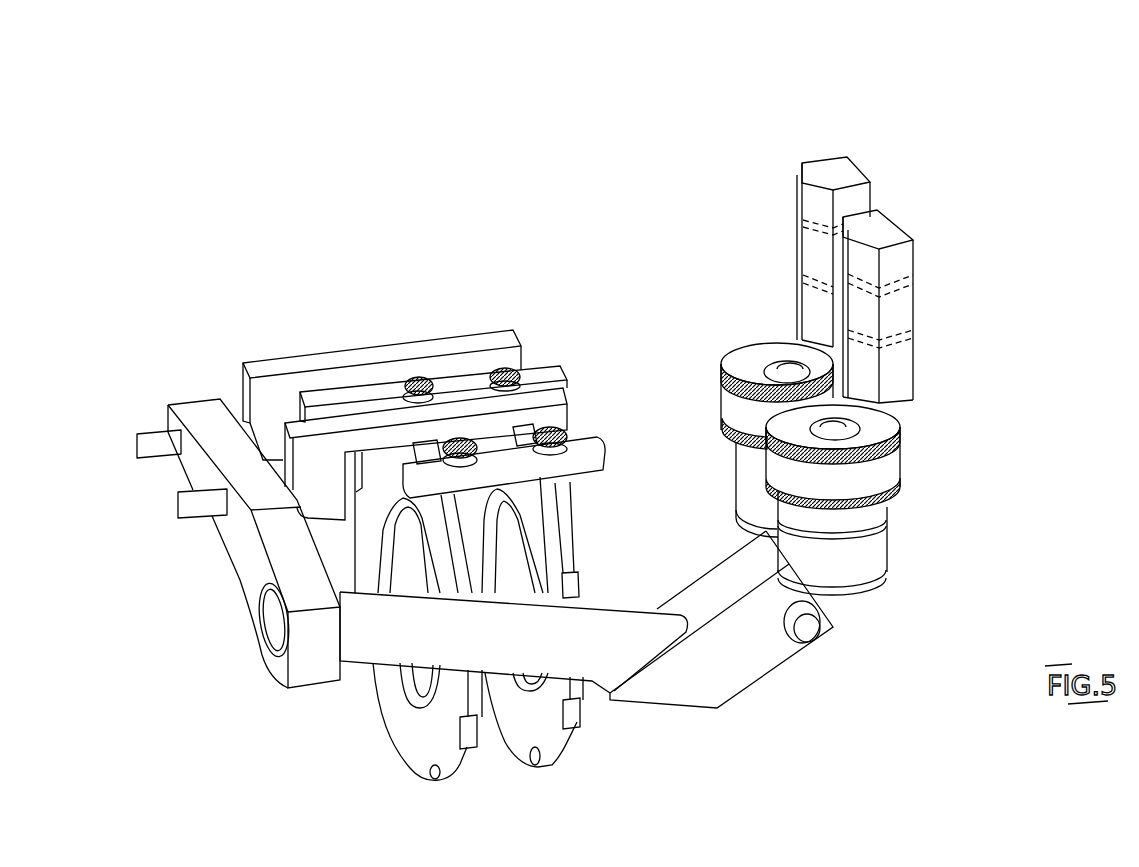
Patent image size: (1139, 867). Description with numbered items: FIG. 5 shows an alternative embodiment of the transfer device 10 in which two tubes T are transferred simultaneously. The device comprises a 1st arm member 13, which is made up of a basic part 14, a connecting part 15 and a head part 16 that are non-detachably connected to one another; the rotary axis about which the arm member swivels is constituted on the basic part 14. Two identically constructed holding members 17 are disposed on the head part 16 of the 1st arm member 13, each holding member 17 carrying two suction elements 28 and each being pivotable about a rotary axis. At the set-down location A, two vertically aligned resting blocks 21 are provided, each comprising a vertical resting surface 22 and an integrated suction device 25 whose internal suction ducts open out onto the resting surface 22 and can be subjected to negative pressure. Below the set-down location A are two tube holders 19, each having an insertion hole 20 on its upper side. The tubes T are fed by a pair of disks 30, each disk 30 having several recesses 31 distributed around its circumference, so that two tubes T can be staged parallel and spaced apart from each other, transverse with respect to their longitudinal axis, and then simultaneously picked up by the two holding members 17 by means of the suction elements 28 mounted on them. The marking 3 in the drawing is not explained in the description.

The transfer device 10 is at (518, 110).
The 1st arm member 13 is at (641, 609).
The basic part 14 is at (742, 673).
The connecting part 15 is at (522, 653).
The head part 16 is at (238, 556).
The holding member 17 is at (307, 357).
The tube holder 19 is at (747, 495).
The insertion hole 20 is at (773, 372).
The resting block 21 is at (833, 172).
The resting surface 22 is at (797, 174).
The suction device 25 is at (896, 282).
The suction element 28 is at (420, 382).
The disk 30 is at (576, 536).
The recess 31 is at (390, 718).
The reference 3 is at (584, 391).
The set-down location A is at (797, 273).
The tube T is at (573, 458).